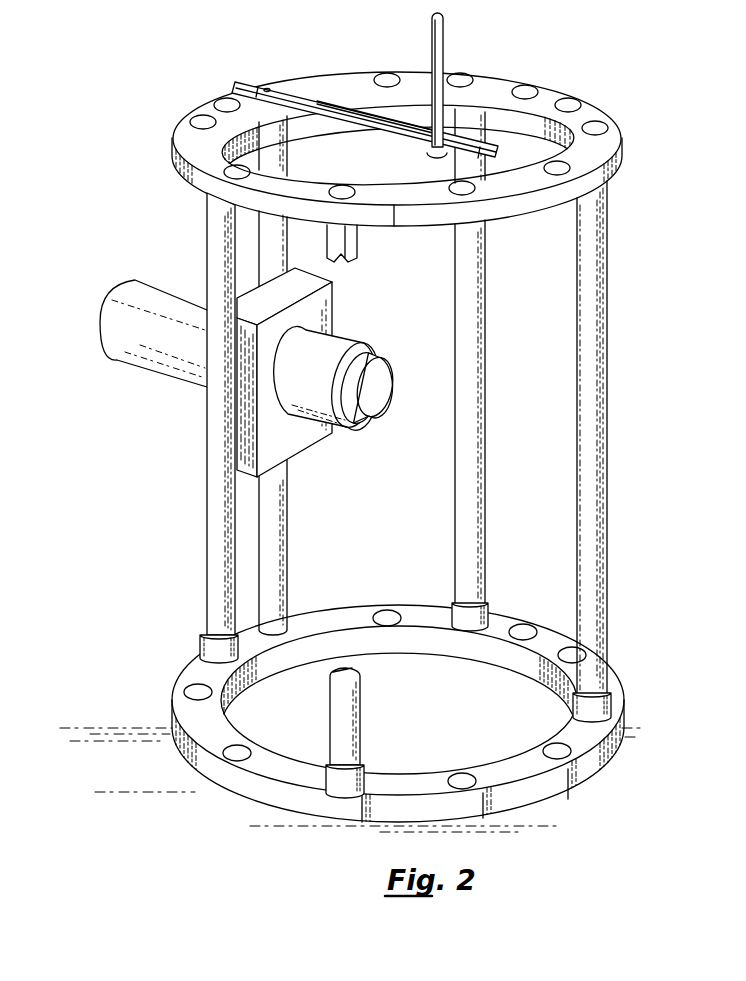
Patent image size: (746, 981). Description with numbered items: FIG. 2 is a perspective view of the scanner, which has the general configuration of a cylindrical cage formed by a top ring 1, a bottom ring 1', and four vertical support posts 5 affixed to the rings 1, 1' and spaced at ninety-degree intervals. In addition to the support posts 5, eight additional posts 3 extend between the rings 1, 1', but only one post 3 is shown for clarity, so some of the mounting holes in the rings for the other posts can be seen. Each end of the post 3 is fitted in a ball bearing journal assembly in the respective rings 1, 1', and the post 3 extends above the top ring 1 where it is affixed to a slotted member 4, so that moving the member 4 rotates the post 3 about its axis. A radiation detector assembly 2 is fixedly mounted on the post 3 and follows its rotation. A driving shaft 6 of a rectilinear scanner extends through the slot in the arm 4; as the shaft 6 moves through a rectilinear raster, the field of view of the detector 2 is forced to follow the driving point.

The top ring 1 is at (373, 167).
The bottom ring 1' is at (398, 713).
The radiation detector assembly 2 is at (330, 347).
The post 3 is at (270, 530).
The slotted member 4 is at (390, 133).
The vertical support post 5 is at (588, 285).
The driving shaft 6 is at (442, 43).